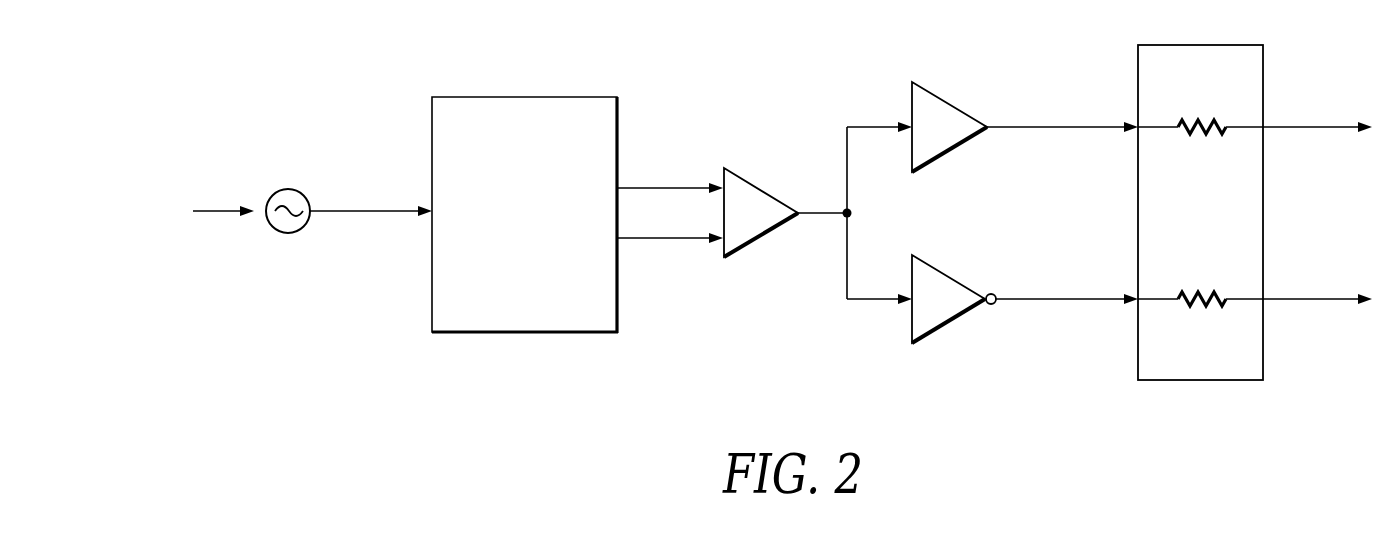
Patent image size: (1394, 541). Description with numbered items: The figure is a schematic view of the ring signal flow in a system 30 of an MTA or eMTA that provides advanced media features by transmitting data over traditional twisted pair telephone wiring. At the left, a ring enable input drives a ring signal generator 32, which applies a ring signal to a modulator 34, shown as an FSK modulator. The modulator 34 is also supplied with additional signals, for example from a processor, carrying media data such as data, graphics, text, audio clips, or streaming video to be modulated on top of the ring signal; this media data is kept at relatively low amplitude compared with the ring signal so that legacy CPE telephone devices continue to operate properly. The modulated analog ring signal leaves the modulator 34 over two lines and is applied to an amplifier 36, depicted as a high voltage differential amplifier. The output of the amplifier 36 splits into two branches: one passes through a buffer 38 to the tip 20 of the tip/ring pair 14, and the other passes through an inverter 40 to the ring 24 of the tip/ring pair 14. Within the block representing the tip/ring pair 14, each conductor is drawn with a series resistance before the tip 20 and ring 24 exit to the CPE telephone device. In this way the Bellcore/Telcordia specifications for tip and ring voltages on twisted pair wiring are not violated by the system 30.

The system 30 is at (146, 72).
The ring signal generator 32 is at (288, 233).
The modulator 34 is at (598, 96).
The amplifier 36 is at (765, 240).
The buffer 38 is at (950, 150).
The inverter 40 is at (948, 271).
The tip/ring pair 14 is at (1138, 213).
The tip 20 is at (1300, 129).
The ring 24 is at (1300, 301).